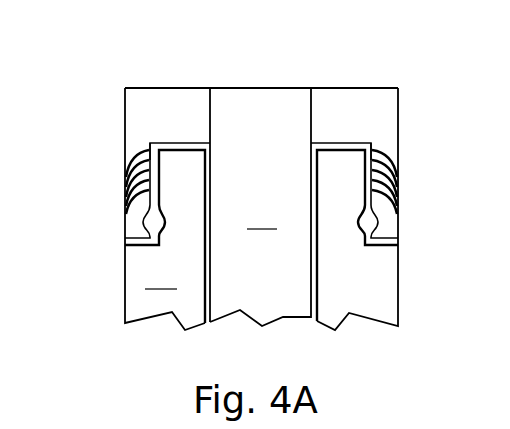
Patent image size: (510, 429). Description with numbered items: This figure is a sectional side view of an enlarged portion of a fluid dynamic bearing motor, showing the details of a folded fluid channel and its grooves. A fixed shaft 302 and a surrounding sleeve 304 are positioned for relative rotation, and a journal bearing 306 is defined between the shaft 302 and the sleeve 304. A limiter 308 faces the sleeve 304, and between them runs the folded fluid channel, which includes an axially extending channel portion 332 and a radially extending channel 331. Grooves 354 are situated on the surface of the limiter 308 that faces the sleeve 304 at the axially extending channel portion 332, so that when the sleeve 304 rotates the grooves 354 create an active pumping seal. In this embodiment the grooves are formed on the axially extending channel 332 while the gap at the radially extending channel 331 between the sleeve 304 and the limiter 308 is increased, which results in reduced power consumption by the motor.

The shaft 302 is at (260, 207).
The sleeve 304 is at (165, 209).
The journal bearing 306 is at (210, 192).
The limiter 308 is at (340, 107).
The radially extending channel 331 is at (170, 143).
The axially extending channel portion 332 is at (150, 150).
The grooves 354 is at (125, 175).